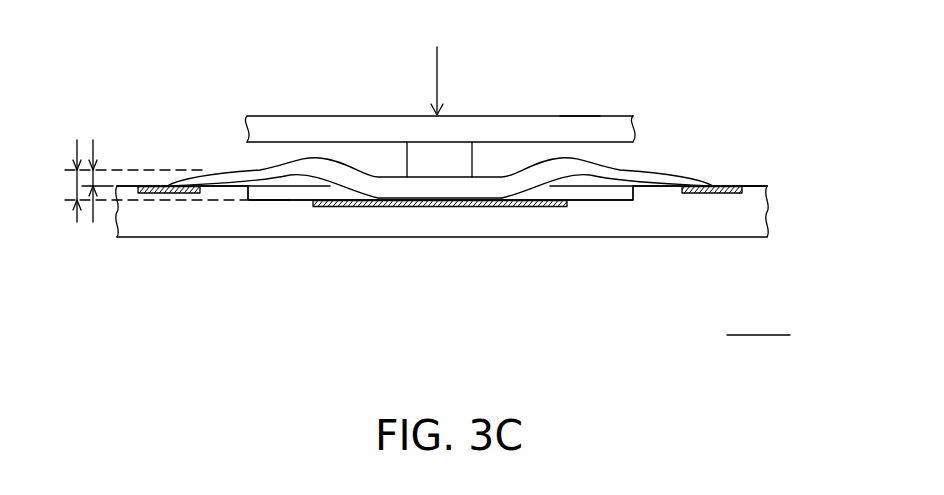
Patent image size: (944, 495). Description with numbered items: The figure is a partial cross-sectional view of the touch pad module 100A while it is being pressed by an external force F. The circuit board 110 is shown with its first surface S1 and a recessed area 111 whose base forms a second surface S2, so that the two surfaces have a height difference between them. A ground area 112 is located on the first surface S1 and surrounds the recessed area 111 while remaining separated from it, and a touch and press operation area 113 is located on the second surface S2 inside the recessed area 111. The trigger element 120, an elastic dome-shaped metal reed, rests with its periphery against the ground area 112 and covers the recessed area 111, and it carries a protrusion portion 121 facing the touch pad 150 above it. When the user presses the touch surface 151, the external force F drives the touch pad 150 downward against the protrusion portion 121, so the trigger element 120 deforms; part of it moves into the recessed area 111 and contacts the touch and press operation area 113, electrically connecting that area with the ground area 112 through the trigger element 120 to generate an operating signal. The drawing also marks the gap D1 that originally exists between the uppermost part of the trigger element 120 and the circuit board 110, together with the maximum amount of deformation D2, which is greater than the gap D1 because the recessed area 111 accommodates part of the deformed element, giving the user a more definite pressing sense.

The circuit board 110 is at (753, 213).
The recessed area 111 is at (627, 191).
The ground area 112 is at (148, 193).
The touch and press operation area 113 is at (435, 207).
The trigger element 120 is at (630, 172).
The protrusion portion 121 is at (427, 152).
The touch pad 150 is at (520, 126).
The touch surface 151 is at (577, 113).
The external force F is at (436, 65).
The first surface S1 is at (752, 185).
The second surface S2 is at (267, 199).
The gap D1 is at (95, 178).
The maximum amount of deformation D2 is at (145, 181).
The touch pad module 100A is at (758, 317).